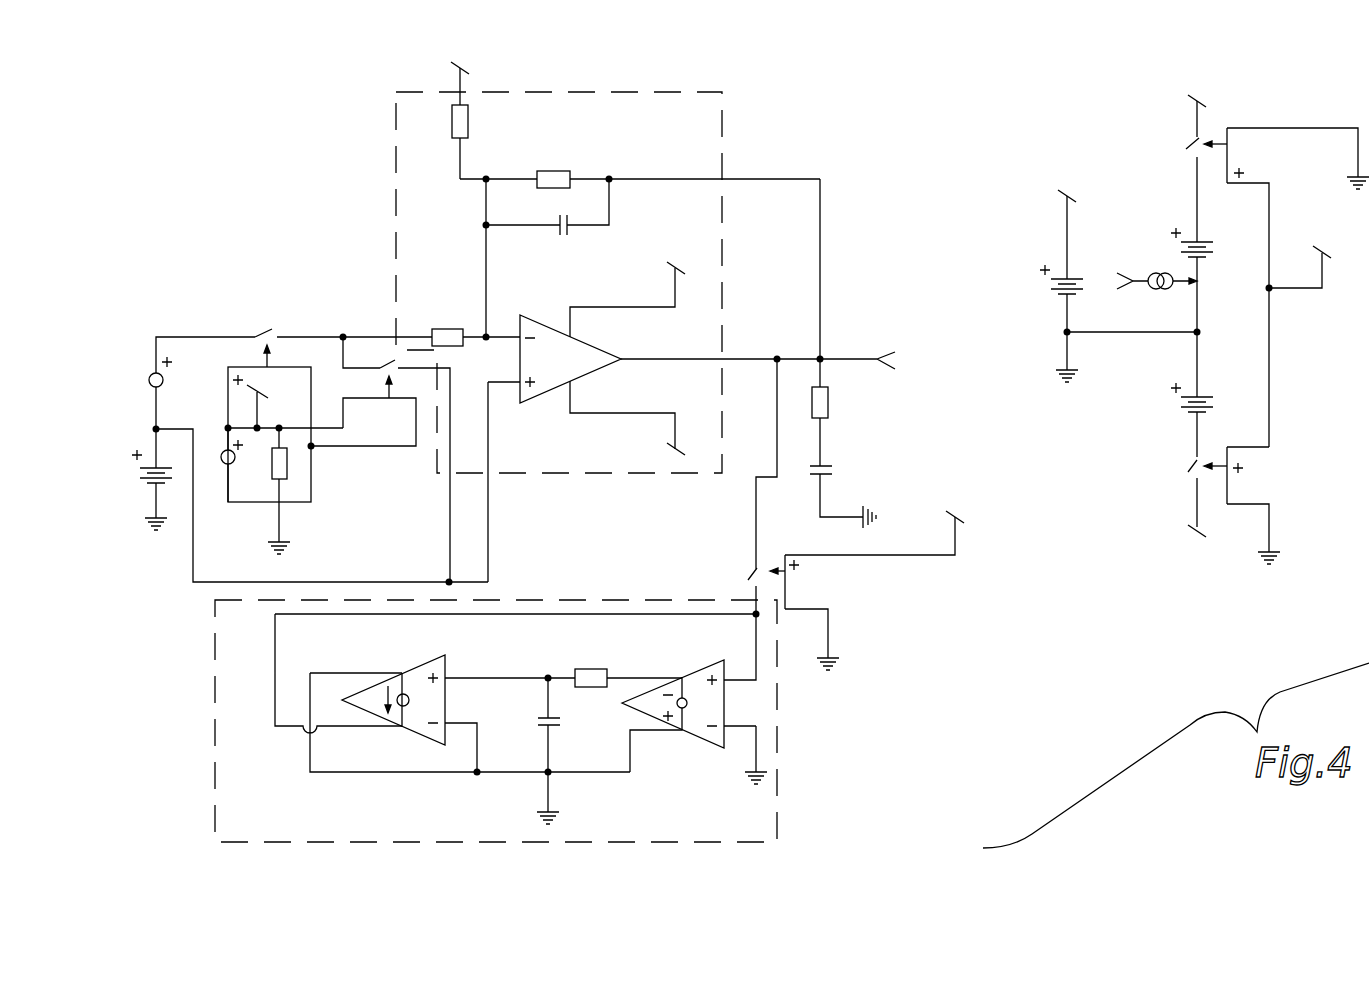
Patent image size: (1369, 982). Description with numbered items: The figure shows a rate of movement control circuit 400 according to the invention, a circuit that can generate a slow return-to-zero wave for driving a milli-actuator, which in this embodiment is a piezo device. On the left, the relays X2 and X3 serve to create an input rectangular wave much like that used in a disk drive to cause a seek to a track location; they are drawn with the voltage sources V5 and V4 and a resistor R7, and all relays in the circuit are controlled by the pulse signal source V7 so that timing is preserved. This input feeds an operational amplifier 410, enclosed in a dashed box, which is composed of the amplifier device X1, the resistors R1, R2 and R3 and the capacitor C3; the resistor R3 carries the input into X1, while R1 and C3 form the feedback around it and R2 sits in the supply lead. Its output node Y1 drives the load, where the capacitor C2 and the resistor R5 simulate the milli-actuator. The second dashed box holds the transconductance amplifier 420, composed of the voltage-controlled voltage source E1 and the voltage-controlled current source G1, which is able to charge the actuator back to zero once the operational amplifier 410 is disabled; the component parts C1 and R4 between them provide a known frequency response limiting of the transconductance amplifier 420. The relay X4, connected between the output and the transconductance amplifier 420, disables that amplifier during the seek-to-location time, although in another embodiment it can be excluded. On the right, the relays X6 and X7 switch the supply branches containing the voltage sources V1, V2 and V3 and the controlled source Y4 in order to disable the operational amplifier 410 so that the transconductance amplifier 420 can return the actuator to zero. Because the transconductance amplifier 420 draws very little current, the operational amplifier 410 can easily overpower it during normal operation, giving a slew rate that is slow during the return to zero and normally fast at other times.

The rate of movement control circuit 400 is at (744, 452).
The operational amplifier 410 is at (722, 116).
The transconductance amplifier 420 is at (777, 829).
The resistor R1 is at (640, 165).
The resistor R2 is at (447, 120).
The resistor R3 is at (431, 323).
The resistor R4 is at (563, 663).
The resistor R5 is at (806, 322).
The resistor R7 is at (268, 491).
The capacitor C1 is at (537, 751).
The capacitor C2 is at (843, 492).
The capacitor C3 is at (546, 258).
The operational amplifier device X1 is at (586, 422).
The relay X2 is at (286, 415).
The relay X3 is at (379, 459).
The relay X4 is at (844, 571).
The relay X6 is at (1277, 271).
The relay X7 is at (1240, 505).
The voltage source V1 is at (1113, 286).
The voltage source V2 is at (1205, 277).
The voltage source V3 is at (1204, 460).
The voltage source V4 is at (304, 506).
The voltage source V5 is at (190, 383).
The pulse signal source V7 is at (221, 465).
The output terminal Y1 is at (776, 362).
The current-controlled current source Y4 is at (1157, 256).
The voltage-controlled current source G1 is at (515, 695).
The voltage-controlled voltage source E1 is at (673, 708).